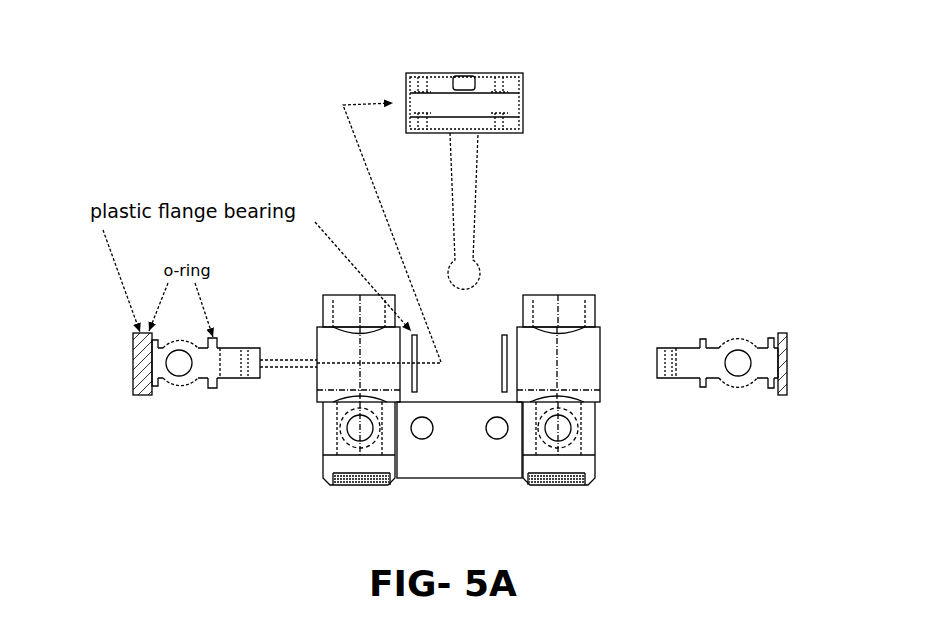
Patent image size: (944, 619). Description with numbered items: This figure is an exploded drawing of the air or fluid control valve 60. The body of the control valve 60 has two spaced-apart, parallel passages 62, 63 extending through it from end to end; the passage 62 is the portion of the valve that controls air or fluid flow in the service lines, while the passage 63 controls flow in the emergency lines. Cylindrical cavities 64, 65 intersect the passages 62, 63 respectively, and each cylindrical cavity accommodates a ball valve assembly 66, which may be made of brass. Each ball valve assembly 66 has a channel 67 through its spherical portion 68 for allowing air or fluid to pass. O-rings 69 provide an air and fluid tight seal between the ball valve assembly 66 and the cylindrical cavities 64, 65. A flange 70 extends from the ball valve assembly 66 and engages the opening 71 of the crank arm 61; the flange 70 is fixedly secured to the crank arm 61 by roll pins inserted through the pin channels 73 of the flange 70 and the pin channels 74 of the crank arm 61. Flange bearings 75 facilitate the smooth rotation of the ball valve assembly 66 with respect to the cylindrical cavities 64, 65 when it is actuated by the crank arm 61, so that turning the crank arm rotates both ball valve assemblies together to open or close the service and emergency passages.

The control valve 60 is at (695, 184).
The crank arm 61 is at (479, 267).
The passage 62 is at (347, 295).
The passage 63 is at (568, 295).
The cylindrical cavity 64 is at (317, 333).
The cylindrical cavity 65 is at (600, 347).
The ball valve assembly 66 is at (172, 387).
The channel 67 is at (182, 374).
The spherical portion 68 is at (168, 341).
The O-ring 69 is at (140, 388).
The flange 70 is at (235, 378).
The opening 71 is at (510, 100).
The pin channel 73 is at (248, 348).
The pin channel 74 is at (422, 72).
The flange bearing 75 is at (140, 338).